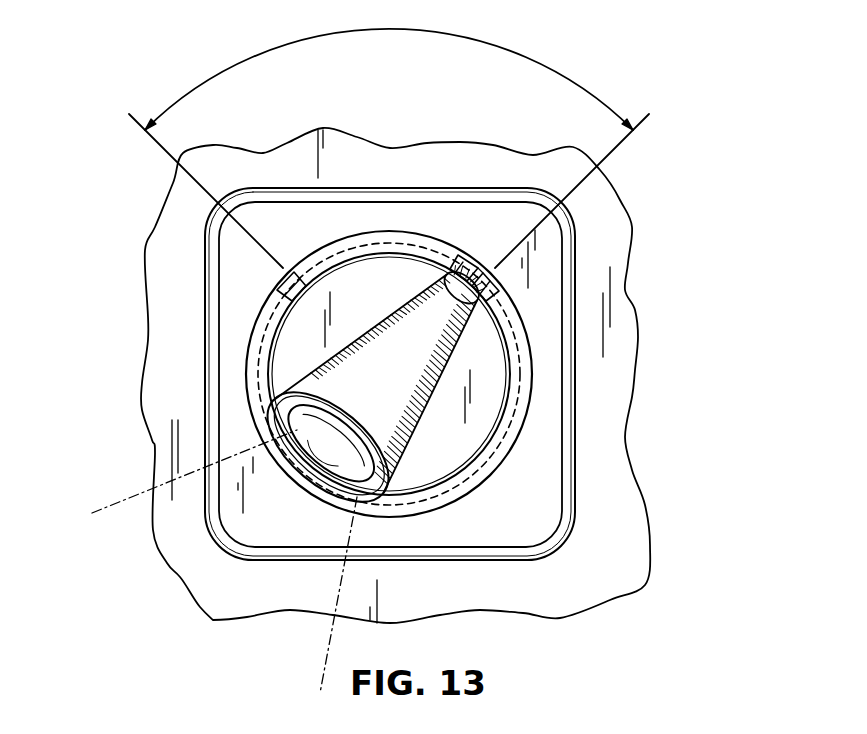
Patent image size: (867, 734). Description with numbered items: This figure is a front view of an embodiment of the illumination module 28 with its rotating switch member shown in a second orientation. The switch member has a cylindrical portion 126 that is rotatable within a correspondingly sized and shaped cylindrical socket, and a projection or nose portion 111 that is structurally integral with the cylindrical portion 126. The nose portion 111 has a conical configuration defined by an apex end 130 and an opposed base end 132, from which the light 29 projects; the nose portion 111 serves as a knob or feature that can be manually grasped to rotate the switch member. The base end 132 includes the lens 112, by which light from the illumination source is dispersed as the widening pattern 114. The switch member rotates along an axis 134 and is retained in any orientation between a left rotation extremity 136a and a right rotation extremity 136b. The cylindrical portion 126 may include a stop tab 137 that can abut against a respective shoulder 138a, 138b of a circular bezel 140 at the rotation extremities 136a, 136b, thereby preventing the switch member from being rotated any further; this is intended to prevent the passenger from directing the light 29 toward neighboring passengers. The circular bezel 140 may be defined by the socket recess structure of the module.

The illumination module 28 is at (714, 214).
The light 29 is at (205, 561).
The nose portion 111 is at (443, 327).
The lens 112 is at (300, 468).
The widening pattern 114 is at (115, 503).
The cylindrical portion 126 is at (480, 423).
The apex end 130 is at (465, 236).
The base end 132 is at (300, 494).
The axis 134 is at (508, 48).
The left rotation extremity 136a is at (131, 121).
The right rotation extremity 136b is at (644, 120).
The stop tab 137 is at (460, 268).
The shoulder 138a is at (295, 270).
The shoulder 138b is at (485, 277).
The circular bezel 140 is at (529, 370).